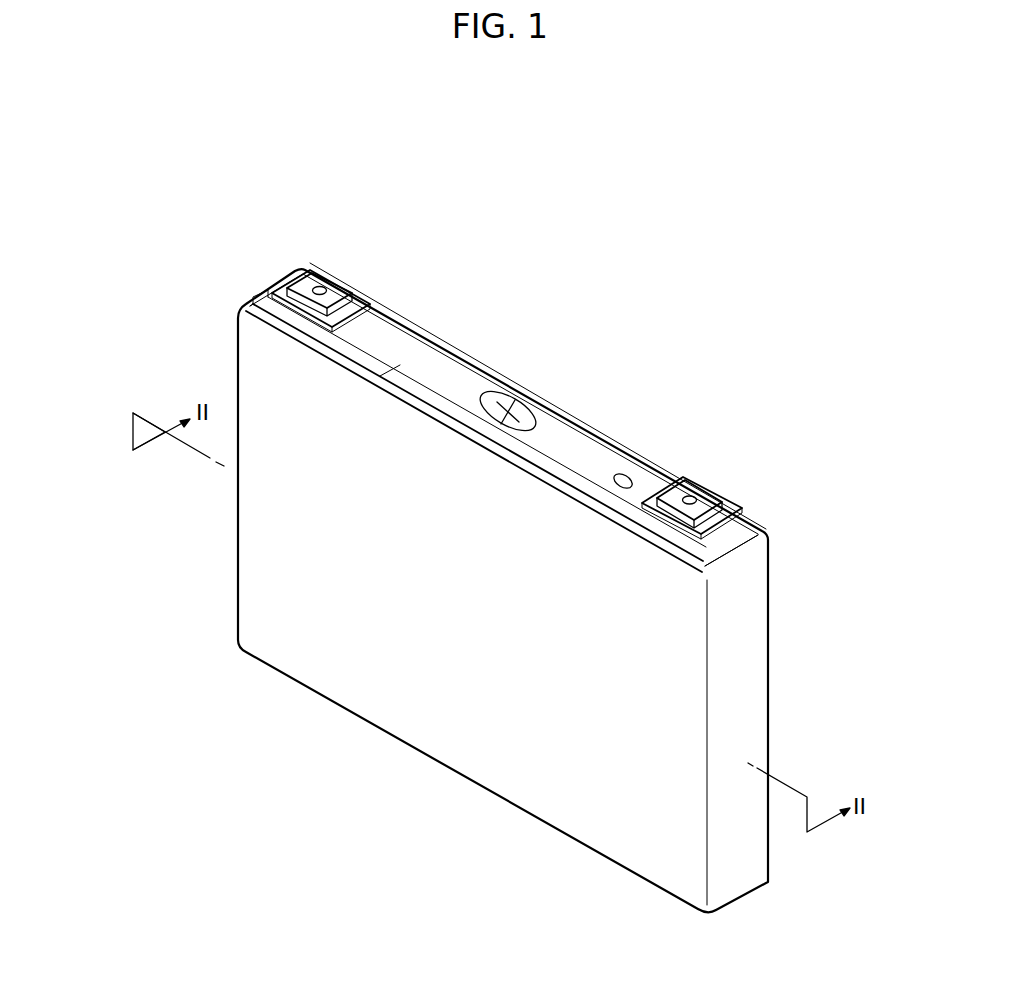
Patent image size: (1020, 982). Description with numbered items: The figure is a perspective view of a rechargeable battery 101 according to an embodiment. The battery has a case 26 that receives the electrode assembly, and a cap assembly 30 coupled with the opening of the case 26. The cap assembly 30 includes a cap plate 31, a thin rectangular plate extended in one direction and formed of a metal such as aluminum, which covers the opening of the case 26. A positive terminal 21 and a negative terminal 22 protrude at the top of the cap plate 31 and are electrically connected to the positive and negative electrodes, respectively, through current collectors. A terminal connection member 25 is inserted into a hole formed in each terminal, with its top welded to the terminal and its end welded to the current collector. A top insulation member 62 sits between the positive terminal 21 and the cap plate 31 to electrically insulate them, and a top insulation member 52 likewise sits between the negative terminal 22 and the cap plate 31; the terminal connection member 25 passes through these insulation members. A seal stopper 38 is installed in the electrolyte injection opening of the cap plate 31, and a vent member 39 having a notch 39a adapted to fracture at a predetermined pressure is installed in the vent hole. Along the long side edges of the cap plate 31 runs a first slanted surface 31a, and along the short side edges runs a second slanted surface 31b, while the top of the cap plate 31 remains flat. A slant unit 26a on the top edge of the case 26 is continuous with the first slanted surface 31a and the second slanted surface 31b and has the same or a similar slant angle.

The rechargeable battery 101 is at (505, 205).
The positive terminal 21 is at (710, 500).
The negative terminal 22 is at (343, 293).
The terminal connection member 25 is at (320, 287).
The case 26 is at (740, 548).
The slant unit 26a is at (670, 550).
The cap assembly 30 is at (590, 418).
The cap plate 31 is at (468, 368).
The first slanted surface 31a is at (442, 348).
The second slanted surface 31b is at (263, 300).
The seal stopper 38 is at (623, 474).
The vent member 39 is at (503, 397).
The notch 39a is at (522, 417).
The top insulation member 52 is at (282, 290).
The top insulation member 62 is at (730, 515).